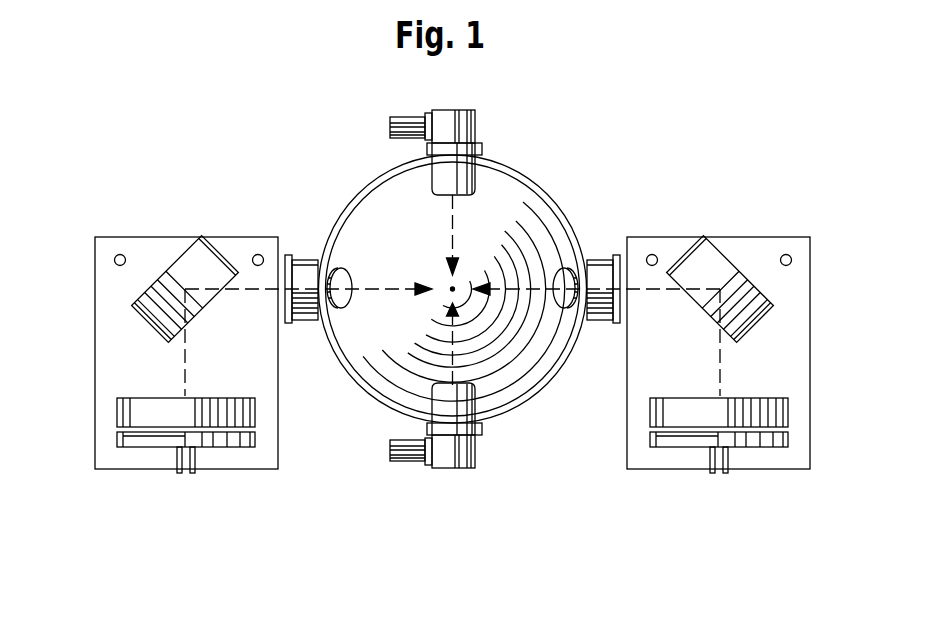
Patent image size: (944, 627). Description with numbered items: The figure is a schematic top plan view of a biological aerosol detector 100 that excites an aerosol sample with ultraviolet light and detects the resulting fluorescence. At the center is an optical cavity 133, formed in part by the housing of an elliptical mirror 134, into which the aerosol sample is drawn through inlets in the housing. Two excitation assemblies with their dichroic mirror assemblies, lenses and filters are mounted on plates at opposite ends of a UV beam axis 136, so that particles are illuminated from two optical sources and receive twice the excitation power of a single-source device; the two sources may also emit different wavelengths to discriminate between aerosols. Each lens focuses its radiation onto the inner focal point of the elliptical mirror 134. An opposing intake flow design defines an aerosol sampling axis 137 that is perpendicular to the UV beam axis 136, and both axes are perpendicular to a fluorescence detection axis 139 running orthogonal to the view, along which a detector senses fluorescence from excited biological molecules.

The biological aerosol detector 100 is at (297, 513).
The optical cavity 133 is at (503, 188).
The elliptical mirror 134 is at (540, 207).
The UV beam axis 136 is at (378, 283).
The aerosol sampling axis 137 is at (458, 348).
The fluorescence detection axis 139 is at (450, 291).